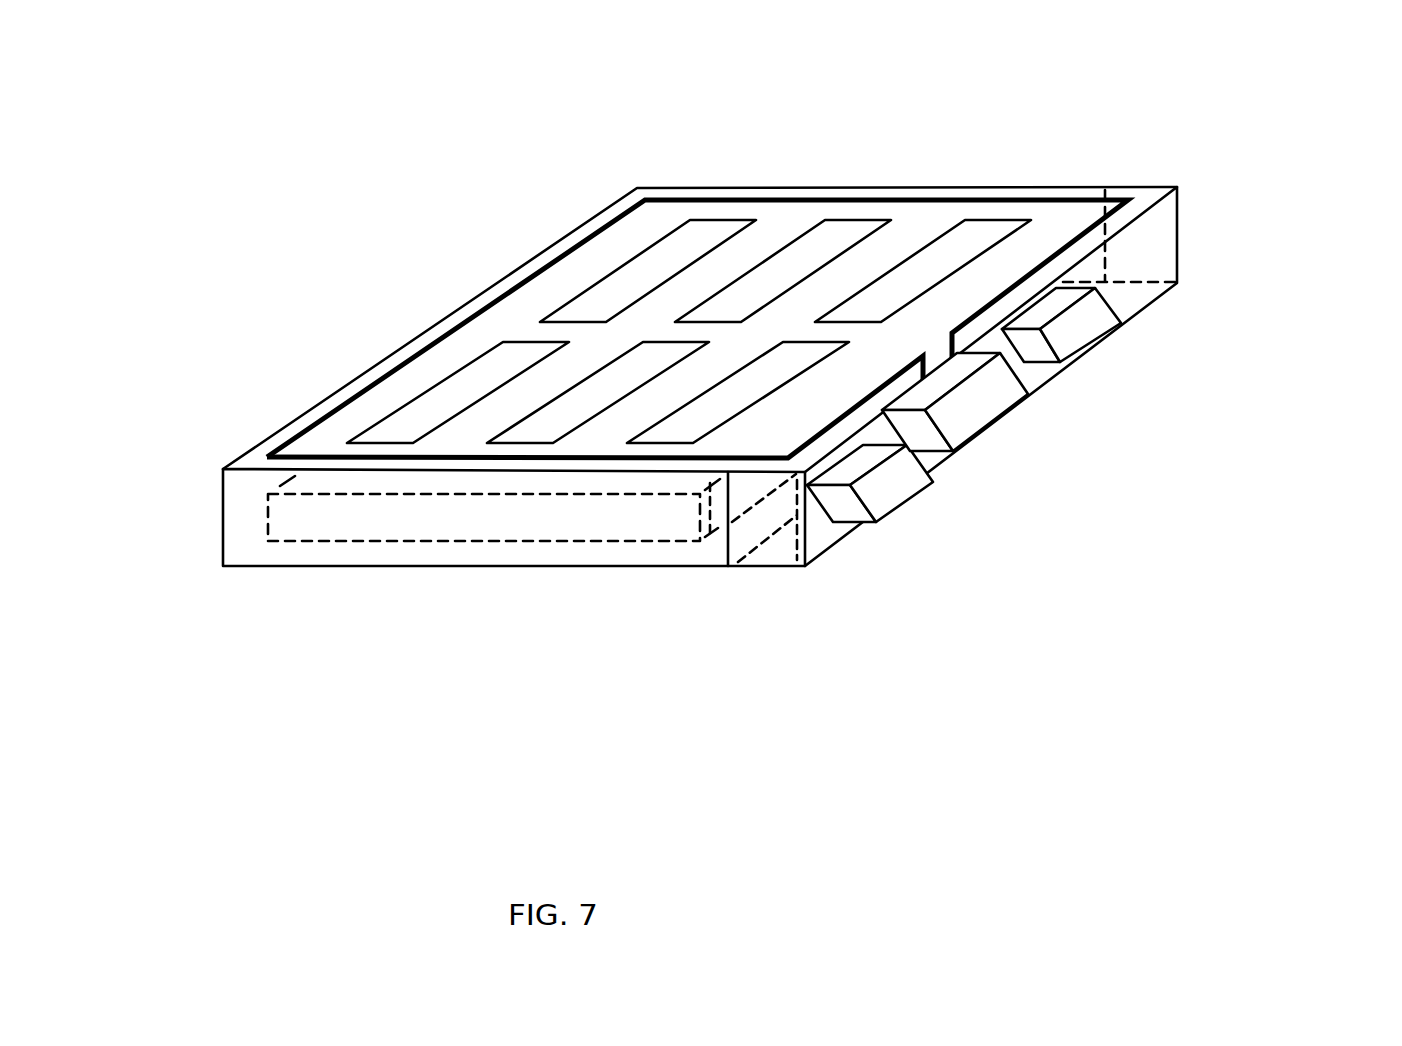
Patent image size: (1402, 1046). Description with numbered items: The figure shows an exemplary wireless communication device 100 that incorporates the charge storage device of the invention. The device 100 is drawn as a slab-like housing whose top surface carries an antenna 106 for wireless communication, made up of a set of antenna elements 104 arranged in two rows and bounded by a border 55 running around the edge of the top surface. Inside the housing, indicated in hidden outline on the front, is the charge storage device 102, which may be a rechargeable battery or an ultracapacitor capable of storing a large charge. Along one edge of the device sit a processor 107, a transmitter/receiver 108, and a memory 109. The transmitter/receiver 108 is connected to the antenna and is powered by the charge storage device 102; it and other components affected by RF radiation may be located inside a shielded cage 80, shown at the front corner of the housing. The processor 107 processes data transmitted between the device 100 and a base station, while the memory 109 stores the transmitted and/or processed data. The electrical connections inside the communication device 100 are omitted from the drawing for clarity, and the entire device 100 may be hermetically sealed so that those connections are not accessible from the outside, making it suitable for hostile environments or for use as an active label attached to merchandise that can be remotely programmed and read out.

The wireless communication device 100 is at (262, 596).
The charge storage device 102 is at (371, 543).
The antenna elements 104 is at (1225, 125).
The antenna 106 is at (915, 188).
The ground border / antenna ground 55 is at (499, 282).
The shielded cage 80 is at (758, 555).
The processor 107 is at (902, 485).
The transmitter/receiver 108 is at (987, 412).
The memory 109 is at (1090, 326).